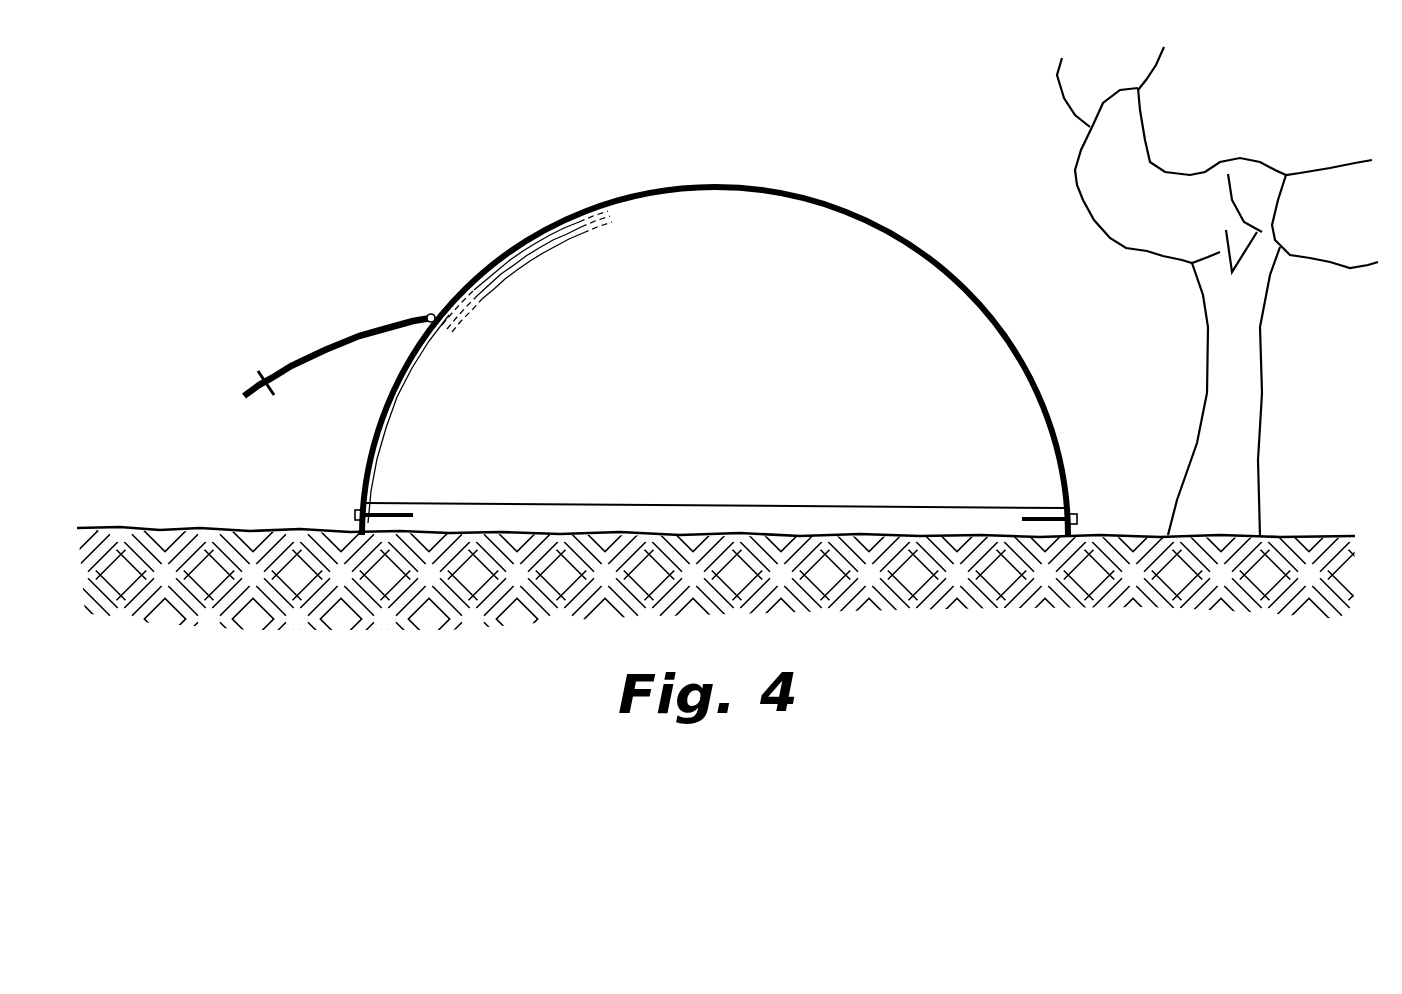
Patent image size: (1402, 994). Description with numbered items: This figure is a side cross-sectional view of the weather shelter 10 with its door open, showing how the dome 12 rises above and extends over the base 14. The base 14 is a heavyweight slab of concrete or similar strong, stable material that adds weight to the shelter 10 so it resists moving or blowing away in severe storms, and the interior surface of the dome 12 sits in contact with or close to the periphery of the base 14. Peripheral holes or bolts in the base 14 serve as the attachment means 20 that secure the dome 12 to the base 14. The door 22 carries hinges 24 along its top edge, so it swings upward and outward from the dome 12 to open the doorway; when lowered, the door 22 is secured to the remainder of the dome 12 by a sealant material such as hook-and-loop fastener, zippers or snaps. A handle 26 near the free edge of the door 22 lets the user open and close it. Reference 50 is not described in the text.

The weather shelter 10 is at (443, 238).
The dome 12 is at (614, 198).
The base 14 is at (731, 517).
The attachment means 20 is at (1078, 515).
The door 22 is at (330, 340).
The hinges 24 is at (426, 315).
The handle 26 is at (260, 375).
The door panel 50 is at (370, 433).